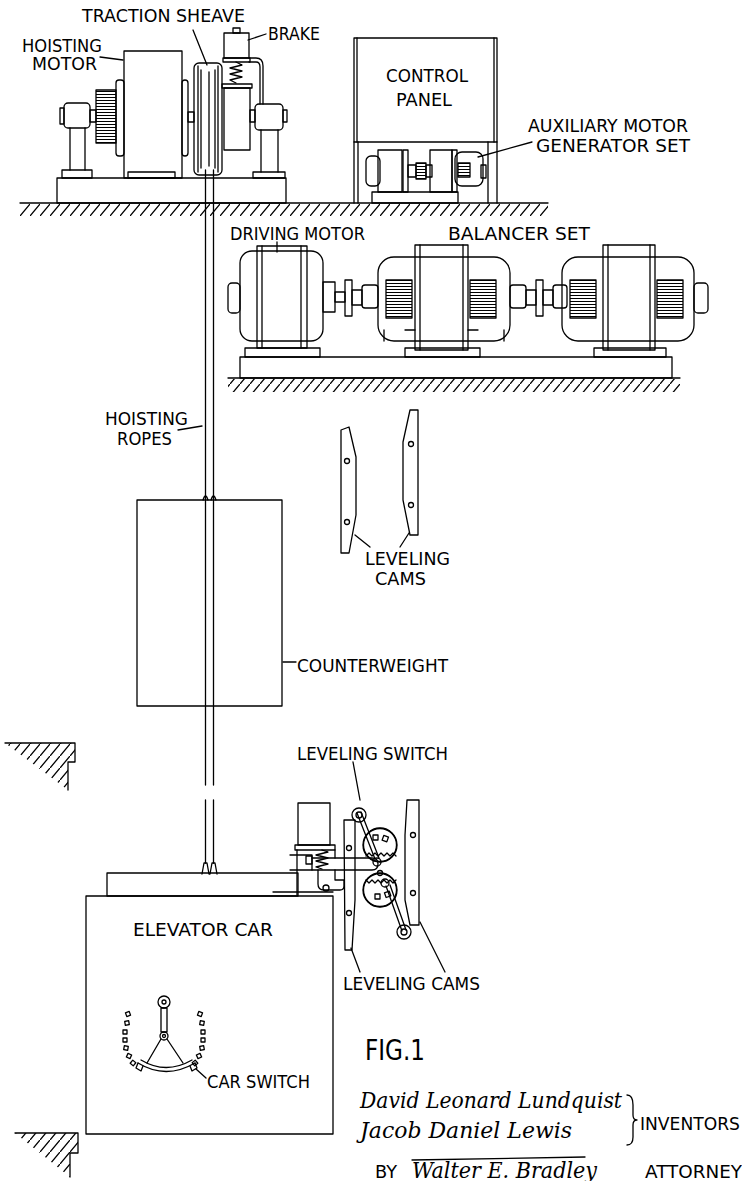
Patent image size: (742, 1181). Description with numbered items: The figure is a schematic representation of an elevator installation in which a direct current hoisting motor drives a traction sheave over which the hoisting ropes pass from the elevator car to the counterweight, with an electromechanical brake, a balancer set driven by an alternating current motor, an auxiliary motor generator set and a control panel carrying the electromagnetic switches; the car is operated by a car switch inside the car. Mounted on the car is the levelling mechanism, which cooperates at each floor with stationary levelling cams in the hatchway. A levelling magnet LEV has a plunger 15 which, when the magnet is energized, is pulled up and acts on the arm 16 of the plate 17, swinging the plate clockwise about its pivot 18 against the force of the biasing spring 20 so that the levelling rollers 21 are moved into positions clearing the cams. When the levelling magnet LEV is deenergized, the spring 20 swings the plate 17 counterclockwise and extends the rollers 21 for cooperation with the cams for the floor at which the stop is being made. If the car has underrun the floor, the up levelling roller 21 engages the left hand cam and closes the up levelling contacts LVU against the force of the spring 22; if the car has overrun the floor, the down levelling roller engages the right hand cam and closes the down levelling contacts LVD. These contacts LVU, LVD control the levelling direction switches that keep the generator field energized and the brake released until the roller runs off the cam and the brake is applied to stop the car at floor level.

The plunger 15 is at (308, 858).
The arm 16 is at (335, 888).
The plate 17 is at (387, 830).
The pivot 18 is at (384, 873).
The biasing spring 20 is at (321, 852).
The levelling rollers 21 is at (354, 810).
The spring 22 is at (396, 826).
The levelling magnet LEV is at (298, 819).
The up levelling contacts LVU is at (382, 830).
The down levelling contacts LVD is at (388, 900).